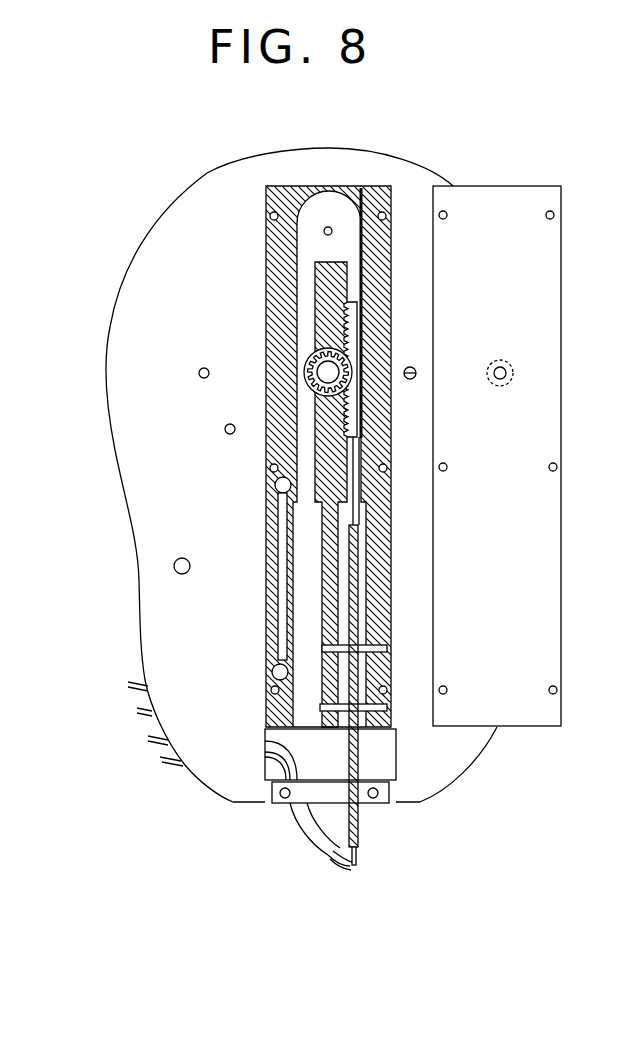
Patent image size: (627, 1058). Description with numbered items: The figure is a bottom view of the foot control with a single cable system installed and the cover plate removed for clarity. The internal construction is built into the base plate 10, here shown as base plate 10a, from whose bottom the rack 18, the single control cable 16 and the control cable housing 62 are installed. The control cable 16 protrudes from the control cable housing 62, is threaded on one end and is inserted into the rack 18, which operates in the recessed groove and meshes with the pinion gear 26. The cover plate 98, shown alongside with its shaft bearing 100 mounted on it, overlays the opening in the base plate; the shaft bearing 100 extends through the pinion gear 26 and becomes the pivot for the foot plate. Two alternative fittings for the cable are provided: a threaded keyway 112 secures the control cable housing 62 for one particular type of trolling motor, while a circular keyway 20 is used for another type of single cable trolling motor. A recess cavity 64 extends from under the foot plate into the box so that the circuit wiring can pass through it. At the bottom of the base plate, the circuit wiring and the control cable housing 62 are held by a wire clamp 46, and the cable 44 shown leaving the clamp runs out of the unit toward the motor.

The base plate 10 is at (330, 130).
The base plate 10a is at (158, 638).
The rack 18 is at (352, 330).
The pinion gear 26 is at (318, 364).
The recess cavity 64 is at (279, 537).
The threaded keyway 112 is at (385, 645).
The circular keyway 20 is at (385, 705).
The cover plate 98 is at (535, 668).
The shaft bearing 100 is at (505, 378).
The wire clamp 46 is at (310, 796).
The cable 44 is at (312, 838).
The control cable housing 62 is at (360, 825).
The control cable 16 is at (358, 857).